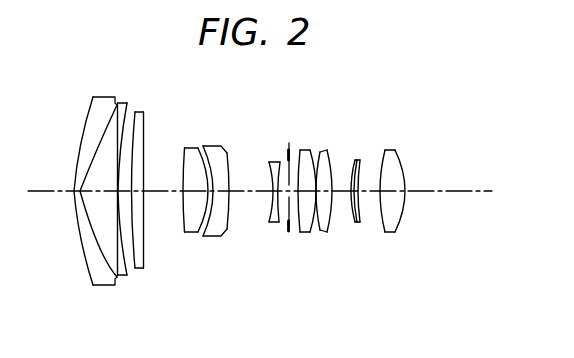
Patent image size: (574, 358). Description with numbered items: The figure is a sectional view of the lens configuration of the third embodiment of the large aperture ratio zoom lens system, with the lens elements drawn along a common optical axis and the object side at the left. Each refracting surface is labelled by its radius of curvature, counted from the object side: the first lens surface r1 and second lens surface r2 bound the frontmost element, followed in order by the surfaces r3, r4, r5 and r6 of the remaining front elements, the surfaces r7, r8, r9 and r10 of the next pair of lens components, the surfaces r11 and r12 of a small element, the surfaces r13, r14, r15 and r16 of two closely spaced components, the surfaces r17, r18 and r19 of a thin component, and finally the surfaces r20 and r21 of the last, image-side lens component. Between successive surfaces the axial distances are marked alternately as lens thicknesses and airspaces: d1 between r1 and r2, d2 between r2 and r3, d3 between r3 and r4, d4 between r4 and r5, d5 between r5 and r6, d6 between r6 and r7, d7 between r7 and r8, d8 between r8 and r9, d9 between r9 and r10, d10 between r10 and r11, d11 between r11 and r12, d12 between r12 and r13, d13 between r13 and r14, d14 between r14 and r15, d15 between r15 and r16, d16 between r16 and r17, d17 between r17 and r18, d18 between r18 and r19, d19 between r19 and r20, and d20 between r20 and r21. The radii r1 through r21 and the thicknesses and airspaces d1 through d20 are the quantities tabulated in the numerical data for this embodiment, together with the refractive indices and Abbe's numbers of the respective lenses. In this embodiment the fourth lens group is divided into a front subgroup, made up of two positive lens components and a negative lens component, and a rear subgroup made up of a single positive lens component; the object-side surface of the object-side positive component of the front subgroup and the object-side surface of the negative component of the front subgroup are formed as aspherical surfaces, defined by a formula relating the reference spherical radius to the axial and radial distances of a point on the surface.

The radius of curvature of first lens surface r1 is at (84, 271).
The radius of curvature of second lens surface r2 is at (103, 268).
The radius of curvature of third lens surface r3 is at (118, 258).
The radius of curvature of fourth lens surface r4 is at (132, 264).
The radius of curvature of fifth lens surface r5 is at (147, 263).
The radius of curvature of sixth lens surface r6 is at (185, 229).
The radius of curvature of seventh lens surface r7 is at (198, 233).
The radius of curvature of eighth lens surface r8 is at (212, 225).
The radius of curvature of ninth lens surface r9 is at (220, 240).
The radius of curvature of tenth lens surface r10 is at (230, 232).
The radius of curvature of eleventh lens surface r11 is at (269, 222).
The radius of curvature of twelfth lens surface r12 is at (277, 226).
The radius of curvature of thirteenth lens surface r13 is at (285, 233).
The radius of curvature of fourteenth lens surface r14 is at (306, 234).
The radius of curvature of fifteenth lens surface r15 is at (319, 233).
The radius of curvature of sixteenth lens surface r16 is at (326, 234).
The radius of curvature of seventeenth lens surface r17 is at (353, 224).
The radius of curvature of eighteenth lens surface r18 is at (357, 224).
The radius of curvature of nineteenth lens surface r19 is at (361, 223).
The radius of curvature of twentieth lens surface r20 is at (387, 233).
The radius of curvature of twenty-first lens surface r21 is at (404, 220).
The first lens thickness or airspace d1 is at (74, 188).
The second lens thickness or airspace d2 is at (77, 188).
The third lens thickness or airspace d3 is at (115, 189).
The fourth lens thickness or airspace d4 is at (131, 191).
The fifth lens thickness or airspace d5 is at (157, 190).
The sixth lens thickness or airspace d6 is at (185, 188).
The seventh lens thickness or airspace d7 is at (186, 188).
The eighth lens thickness or airspace d8 is at (212, 188).
The ninth lens thickness or airspace d9 is at (216, 190).
The tenth lens thickness or airspace d10 is at (245, 191).
The eleventh lens thickness or airspace d11 is at (273, 190).
The twelfth lens thickness or airspace d12 is at (280, 190).
The thirteenth lens thickness or airspace d13 is at (290, 143).
The fourteenth lens thickness or airspace d14 is at (313, 150).
The fifteenth lens thickness or airspace d15 is at (316, 152).
The sixteenth lens thickness or airspace d16 is at (340, 191).
The seventeenth lens thickness or airspace d17 is at (352, 161).
The eighteenth lens thickness or airspace d18 is at (372, 191).
The nineteenth lens thickness or airspace d19 is at (383, 150).
The twentieth lens thickness or airspace d20 is at (399, 160).